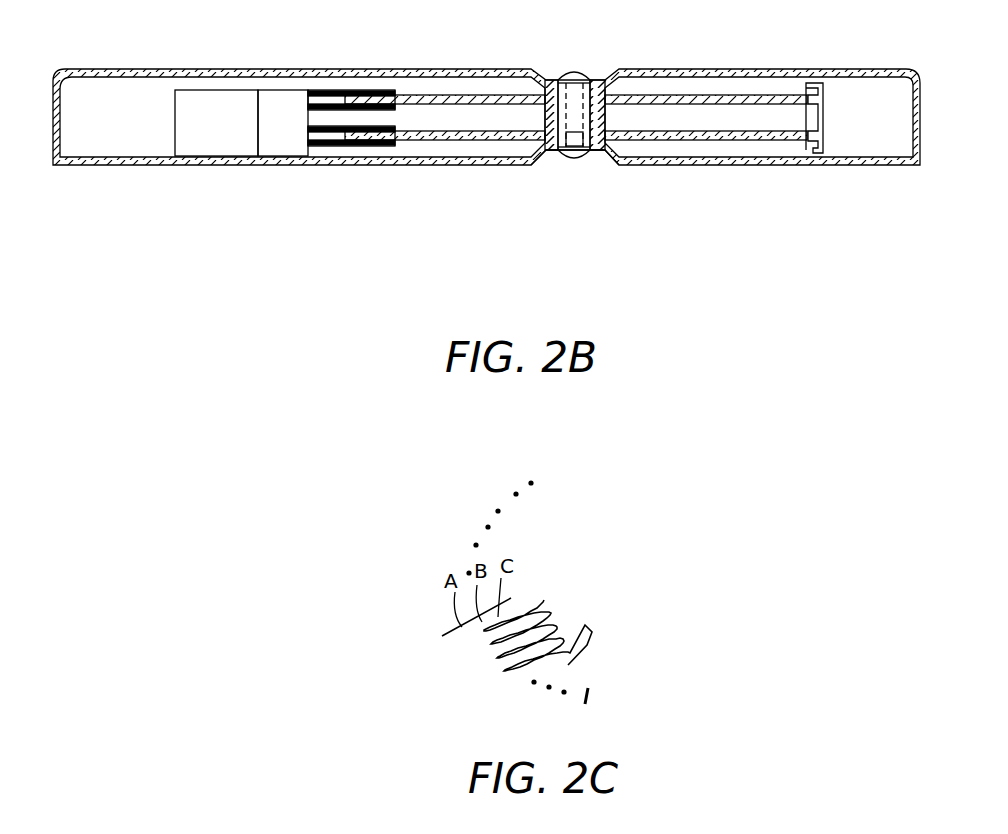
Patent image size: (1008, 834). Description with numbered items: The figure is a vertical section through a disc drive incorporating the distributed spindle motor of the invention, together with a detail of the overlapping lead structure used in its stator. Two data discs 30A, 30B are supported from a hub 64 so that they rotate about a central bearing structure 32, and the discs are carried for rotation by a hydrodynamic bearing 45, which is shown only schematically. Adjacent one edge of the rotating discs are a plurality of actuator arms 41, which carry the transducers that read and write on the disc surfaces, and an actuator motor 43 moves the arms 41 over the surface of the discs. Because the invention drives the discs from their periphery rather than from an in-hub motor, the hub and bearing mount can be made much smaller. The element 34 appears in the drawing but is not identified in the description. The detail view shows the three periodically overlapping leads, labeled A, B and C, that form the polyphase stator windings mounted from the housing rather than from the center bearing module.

The disc 30A is at (790, 94).
The disc 30B is at (781, 142).
The central bearing structure 32 is at (597, 80).
The hub bottom cap 34 is at (565, 167).
The actuator arms 41 is at (416, 90).
The actuator motor 43 is at (235, 148).
The hydrodynamic bearing 45 is at (551, 88).
The hub 64 is at (657, 93).